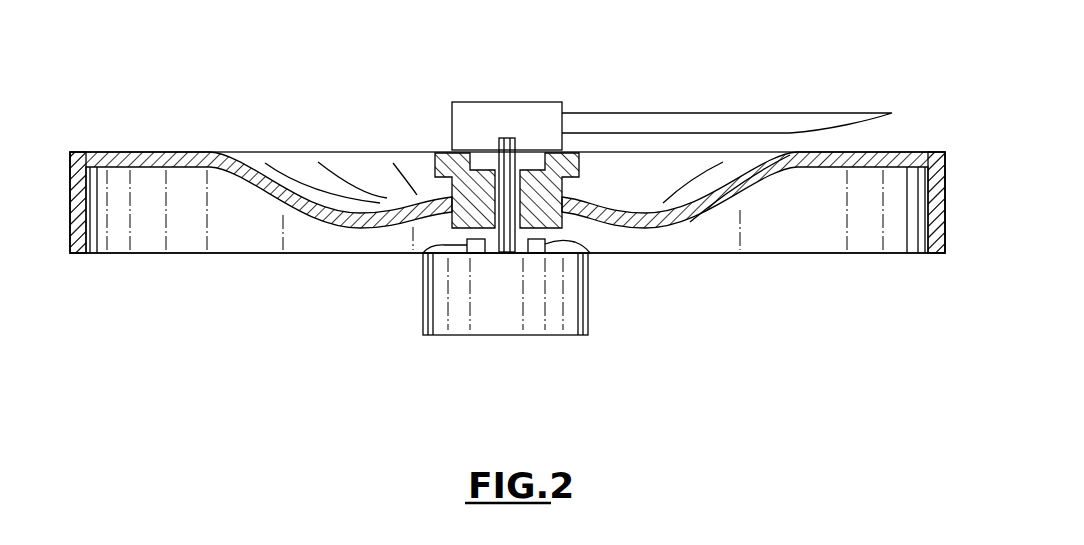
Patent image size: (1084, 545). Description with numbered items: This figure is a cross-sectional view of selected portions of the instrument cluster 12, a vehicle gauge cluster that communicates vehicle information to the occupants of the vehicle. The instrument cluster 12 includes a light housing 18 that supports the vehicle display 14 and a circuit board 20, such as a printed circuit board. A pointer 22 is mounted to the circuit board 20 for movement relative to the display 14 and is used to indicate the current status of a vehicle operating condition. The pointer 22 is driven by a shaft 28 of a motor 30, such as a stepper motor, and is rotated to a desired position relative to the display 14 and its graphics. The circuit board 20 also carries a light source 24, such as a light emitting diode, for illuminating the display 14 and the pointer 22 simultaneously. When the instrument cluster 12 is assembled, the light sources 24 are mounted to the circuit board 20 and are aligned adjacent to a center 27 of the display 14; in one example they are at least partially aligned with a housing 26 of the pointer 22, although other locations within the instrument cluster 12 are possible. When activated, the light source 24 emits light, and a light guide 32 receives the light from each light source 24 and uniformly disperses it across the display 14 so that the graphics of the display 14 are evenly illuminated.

The instrument cluster 12 is at (867, 58).
The vehicle display 14 is at (342, 151).
The light housing 18 is at (935, 152).
The circuit board 20 is at (763, 255).
The pointer 22 is at (608, 113).
The light source 24 is at (423, 256).
The housing of the pointer 26 is at (530, 102).
The center of the display 27 is at (497, 148).
The shaft 28 is at (472, 165).
The motor 30 is at (500, 323).
The light guide 32 is at (591, 183).